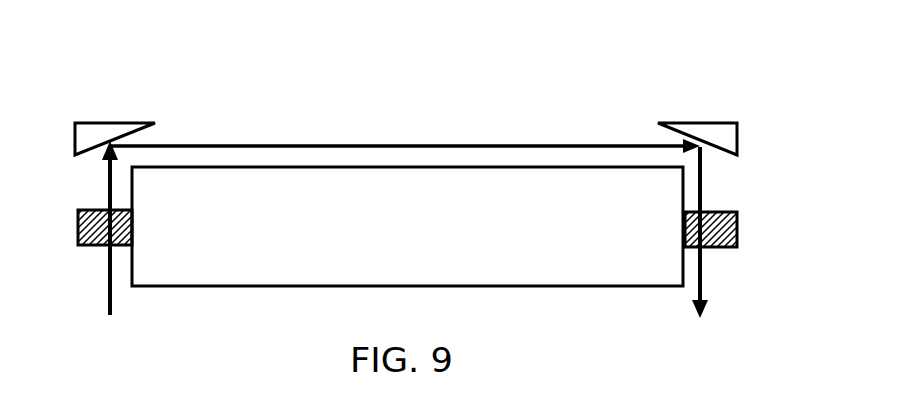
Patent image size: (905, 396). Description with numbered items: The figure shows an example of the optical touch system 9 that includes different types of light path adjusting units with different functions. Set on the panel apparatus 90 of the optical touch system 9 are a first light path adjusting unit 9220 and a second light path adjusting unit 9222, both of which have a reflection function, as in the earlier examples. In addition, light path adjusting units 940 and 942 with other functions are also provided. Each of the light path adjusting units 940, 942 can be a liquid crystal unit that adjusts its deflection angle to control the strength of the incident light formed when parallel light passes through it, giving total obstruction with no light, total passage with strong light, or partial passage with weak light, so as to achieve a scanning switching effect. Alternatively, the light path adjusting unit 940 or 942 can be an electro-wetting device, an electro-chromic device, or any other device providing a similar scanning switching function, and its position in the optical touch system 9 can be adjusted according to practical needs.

The optical touch system 9 is at (460, 92).
The panel apparatus 90 is at (222, 287).
The first light path adjusting unit 9220 is at (125, 122).
The second light path adjusting unit 9222 is at (680, 122).
The light path adjusting unit 940 is at (83, 247).
The light path adjusting unit 942 is at (725, 250).